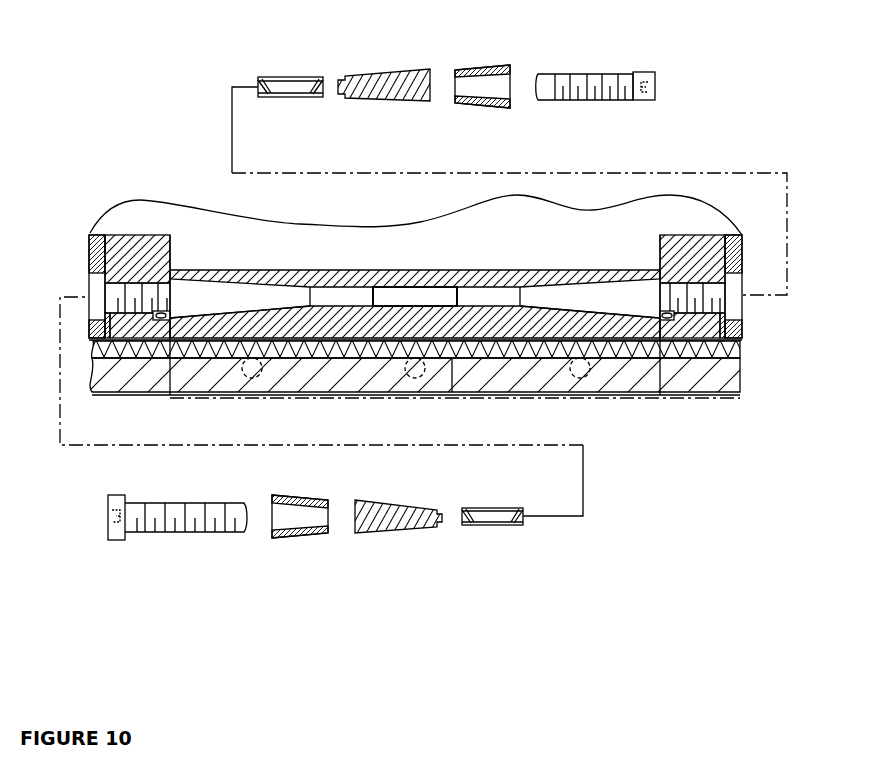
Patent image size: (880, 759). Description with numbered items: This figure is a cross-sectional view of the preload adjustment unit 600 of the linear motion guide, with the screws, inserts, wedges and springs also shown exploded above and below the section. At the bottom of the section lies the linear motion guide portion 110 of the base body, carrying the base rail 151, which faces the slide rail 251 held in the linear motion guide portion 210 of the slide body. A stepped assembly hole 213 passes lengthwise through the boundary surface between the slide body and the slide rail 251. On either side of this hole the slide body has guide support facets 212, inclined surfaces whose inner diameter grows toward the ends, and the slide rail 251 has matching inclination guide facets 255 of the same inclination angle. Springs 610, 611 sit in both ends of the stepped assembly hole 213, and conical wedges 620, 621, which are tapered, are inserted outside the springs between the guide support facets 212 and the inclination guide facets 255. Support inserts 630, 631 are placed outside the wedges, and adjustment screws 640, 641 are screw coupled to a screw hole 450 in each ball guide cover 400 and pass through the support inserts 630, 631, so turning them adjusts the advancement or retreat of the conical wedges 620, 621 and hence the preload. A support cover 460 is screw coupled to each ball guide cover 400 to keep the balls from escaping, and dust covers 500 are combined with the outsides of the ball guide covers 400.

The linear motion guide portion 110 is at (113, 387).
The base rail 151 is at (520, 352).
The linear motion guide portion 210 is at (322, 268).
The guide support facet 212 is at (238, 318).
The stepped assembly hole 213 is at (408, 295).
The slide rail 251 is at (437, 320).
The inclination guide facet 255 is at (282, 300).
The ball guide cover 400 is at (145, 250).
The screw hole 450 is at (161, 320).
The support cover 460 is at (737, 340).
The dust cover 500 is at (89, 233).
The preload adjustment unit 600 is at (570, 543).
The spring 610 is at (497, 525).
The spring 611 is at (290, 75).
The conical wedge 620 is at (405, 535).
The conical wedge 621 is at (380, 72).
The support insert 630 is at (287, 545).
The support insert 631 is at (487, 65).
The adjustment screw 640 is at (170, 545).
The adjustment screw 641 is at (588, 78).